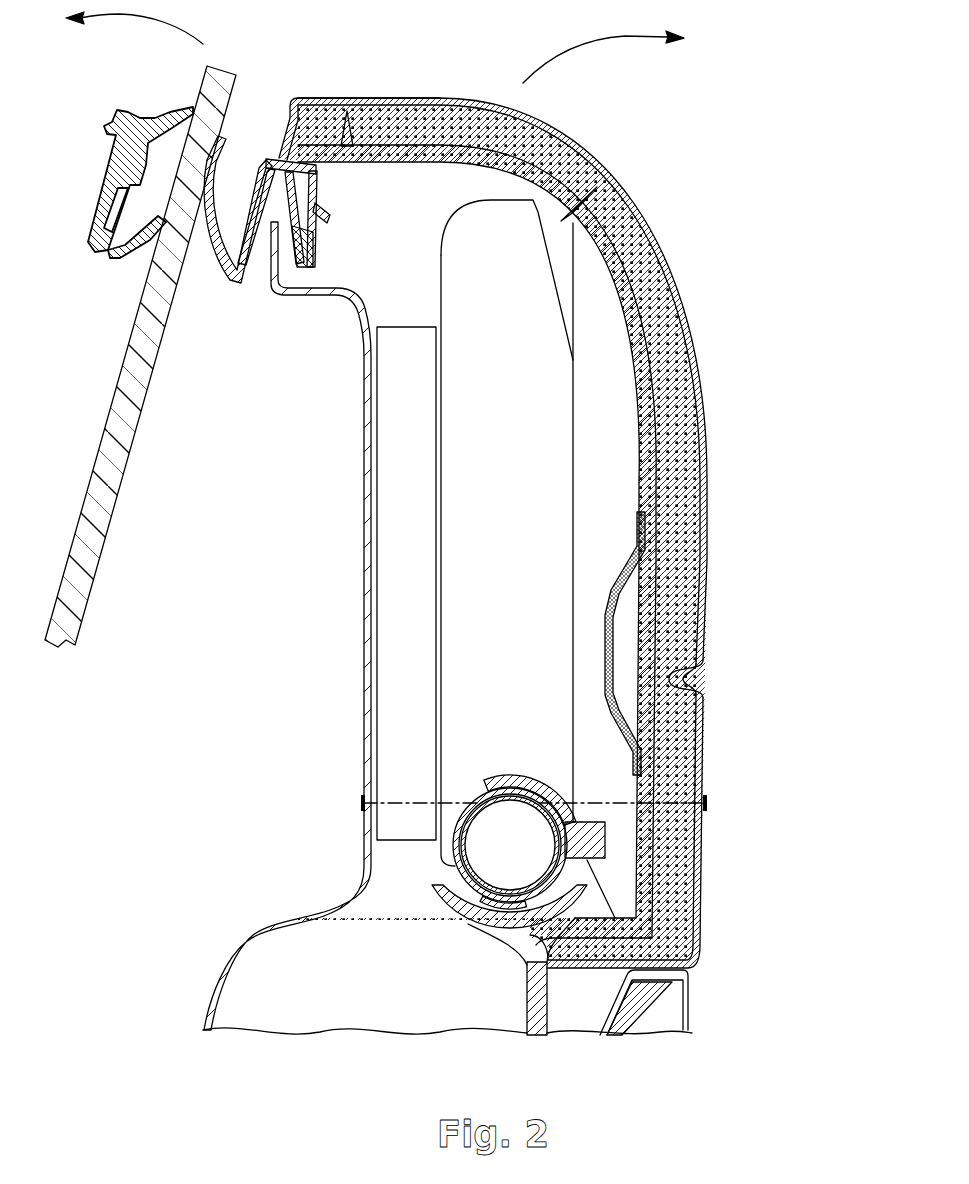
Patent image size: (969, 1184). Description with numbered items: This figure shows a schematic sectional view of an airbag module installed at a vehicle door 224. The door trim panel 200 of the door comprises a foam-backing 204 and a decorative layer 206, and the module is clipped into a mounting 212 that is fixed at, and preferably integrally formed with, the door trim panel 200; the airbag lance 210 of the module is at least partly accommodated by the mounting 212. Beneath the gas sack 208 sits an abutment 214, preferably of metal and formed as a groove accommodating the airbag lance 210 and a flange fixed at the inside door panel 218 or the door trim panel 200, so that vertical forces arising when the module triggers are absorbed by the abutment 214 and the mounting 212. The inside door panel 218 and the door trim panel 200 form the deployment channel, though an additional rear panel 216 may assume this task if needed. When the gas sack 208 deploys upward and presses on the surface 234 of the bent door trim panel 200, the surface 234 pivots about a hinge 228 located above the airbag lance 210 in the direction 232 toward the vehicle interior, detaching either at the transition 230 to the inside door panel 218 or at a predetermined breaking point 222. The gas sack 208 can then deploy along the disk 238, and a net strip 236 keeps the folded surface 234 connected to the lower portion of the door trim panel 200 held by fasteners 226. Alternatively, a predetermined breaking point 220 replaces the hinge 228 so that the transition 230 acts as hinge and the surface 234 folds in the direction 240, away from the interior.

The door trim panel 200 is at (600, 405).
The foam-backing 204 is at (528, 145).
The decorative layer 206 is at (662, 258).
The gas sack 208 is at (480, 668).
The airbag lance 210 is at (455, 858).
The mounting 212 is at (595, 841).
The abutment 214 is at (492, 925).
The rear panel 216 is at (408, 560).
The inside door panel 218 is at (365, 742).
The predetermined breaking point 220 is at (607, 175).
The predetermined breaking point 222 is at (350, 108).
The vehicle door 224 is at (740, 555).
The fasteners 226 is at (707, 795).
The hinge 228 is at (703, 677).
The transition 230 is at (269, 128).
The direction 232 is at (608, 35).
The surface 234 is at (470, 100).
The net strip 236 is at (606, 615).
The disk 238 is at (118, 398).
The direction 240 is at (150, 17).